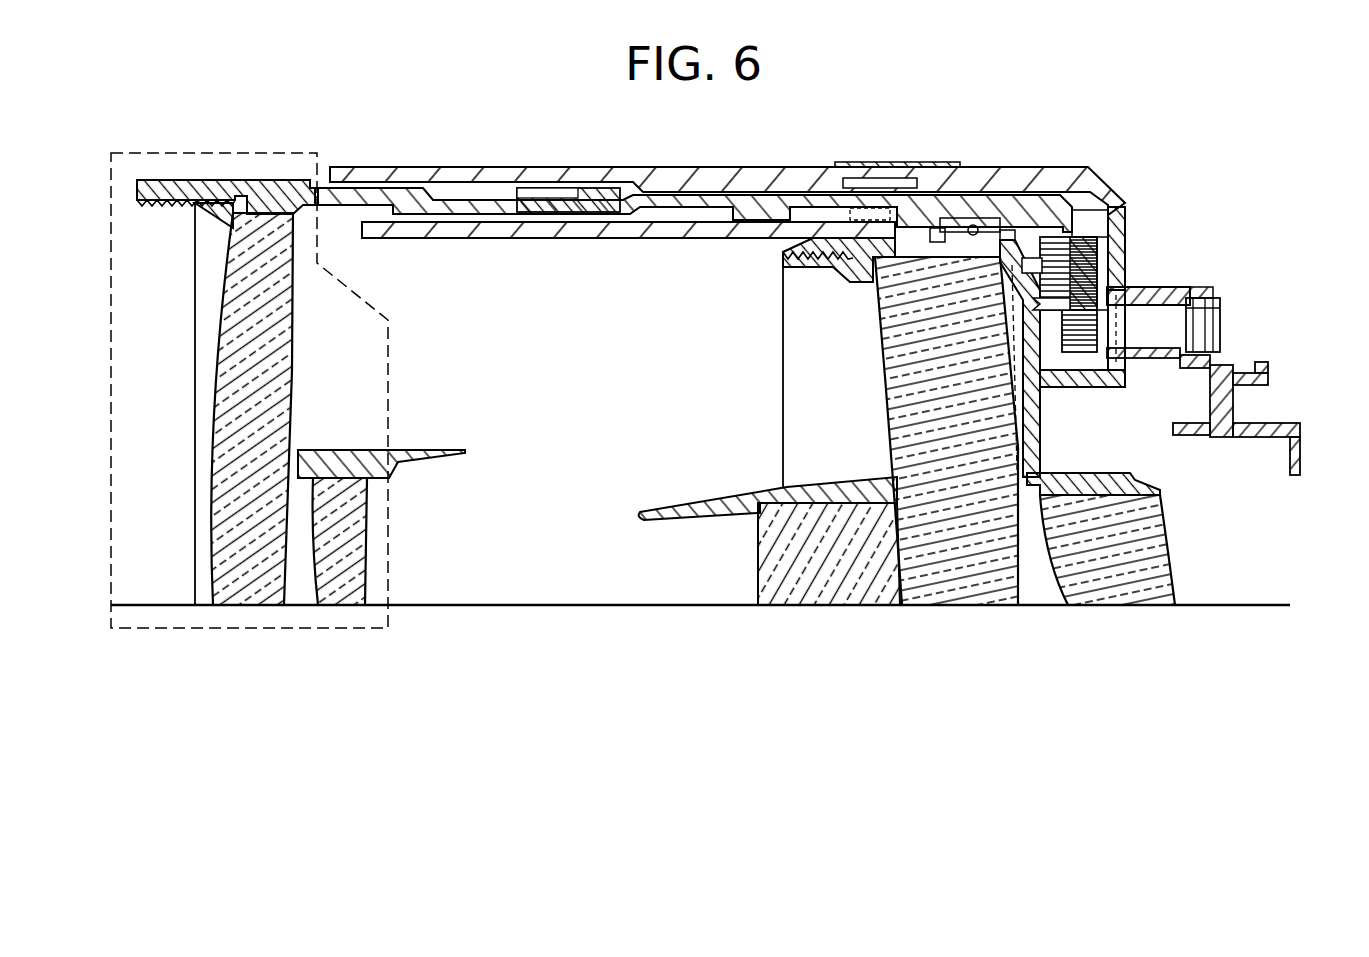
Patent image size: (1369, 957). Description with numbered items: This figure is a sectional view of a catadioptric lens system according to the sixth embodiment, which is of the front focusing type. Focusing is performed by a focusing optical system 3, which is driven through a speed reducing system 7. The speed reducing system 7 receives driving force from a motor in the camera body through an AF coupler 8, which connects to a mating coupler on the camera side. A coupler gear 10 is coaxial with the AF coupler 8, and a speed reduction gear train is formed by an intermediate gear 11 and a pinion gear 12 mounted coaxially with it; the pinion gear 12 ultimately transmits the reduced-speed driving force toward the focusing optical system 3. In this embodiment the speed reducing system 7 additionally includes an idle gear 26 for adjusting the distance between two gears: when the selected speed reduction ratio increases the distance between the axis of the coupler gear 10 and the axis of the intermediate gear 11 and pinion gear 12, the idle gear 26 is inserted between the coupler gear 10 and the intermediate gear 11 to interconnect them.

The focusing optical system 3 is at (240, 152).
The speed reducing system 7 is at (1017, 221).
The AF coupler 8 is at (1222, 329).
The coupler gear 10 is at (1078, 345).
The intermediate gear 11 is at (1140, 252).
The pinion gear 12 is at (1091, 233).
The idle gear 26 is at (1118, 293).